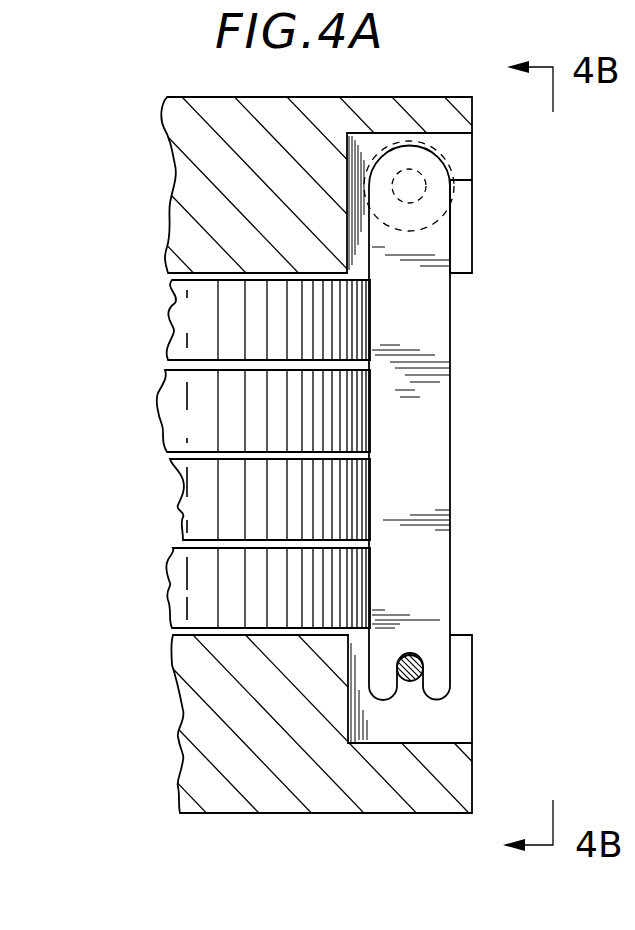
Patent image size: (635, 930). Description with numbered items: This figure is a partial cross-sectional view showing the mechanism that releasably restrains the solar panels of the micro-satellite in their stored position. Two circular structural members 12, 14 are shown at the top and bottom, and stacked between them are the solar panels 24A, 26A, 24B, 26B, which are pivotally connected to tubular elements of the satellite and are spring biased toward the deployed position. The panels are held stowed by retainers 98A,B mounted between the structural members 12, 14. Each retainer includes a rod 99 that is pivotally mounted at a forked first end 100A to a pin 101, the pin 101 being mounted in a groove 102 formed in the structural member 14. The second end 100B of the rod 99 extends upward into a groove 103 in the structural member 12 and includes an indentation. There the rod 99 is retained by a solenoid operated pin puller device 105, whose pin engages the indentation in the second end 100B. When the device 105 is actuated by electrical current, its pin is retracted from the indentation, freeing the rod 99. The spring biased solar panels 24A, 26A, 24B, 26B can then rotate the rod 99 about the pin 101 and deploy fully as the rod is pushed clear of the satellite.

The structural member 12 is at (428, 95).
The structural member 14 is at (262, 822).
The solar panel 24A is at (163, 332).
The solar panel 26A is at (160, 420).
The solar panel 24B is at (180, 512).
The solar panel 26B is at (168, 595).
The retainers 98A,B is at (460, 340).
The rod 99 is at (450, 415).
The forked first end 100A is at (452, 680).
The second end 100B is at (452, 180).
The pin 101 is at (411, 683).
The groove 102 is at (443, 743).
The groove 103 is at (458, 135).
The solenoid operated pin puller device 105 is at (468, 216).